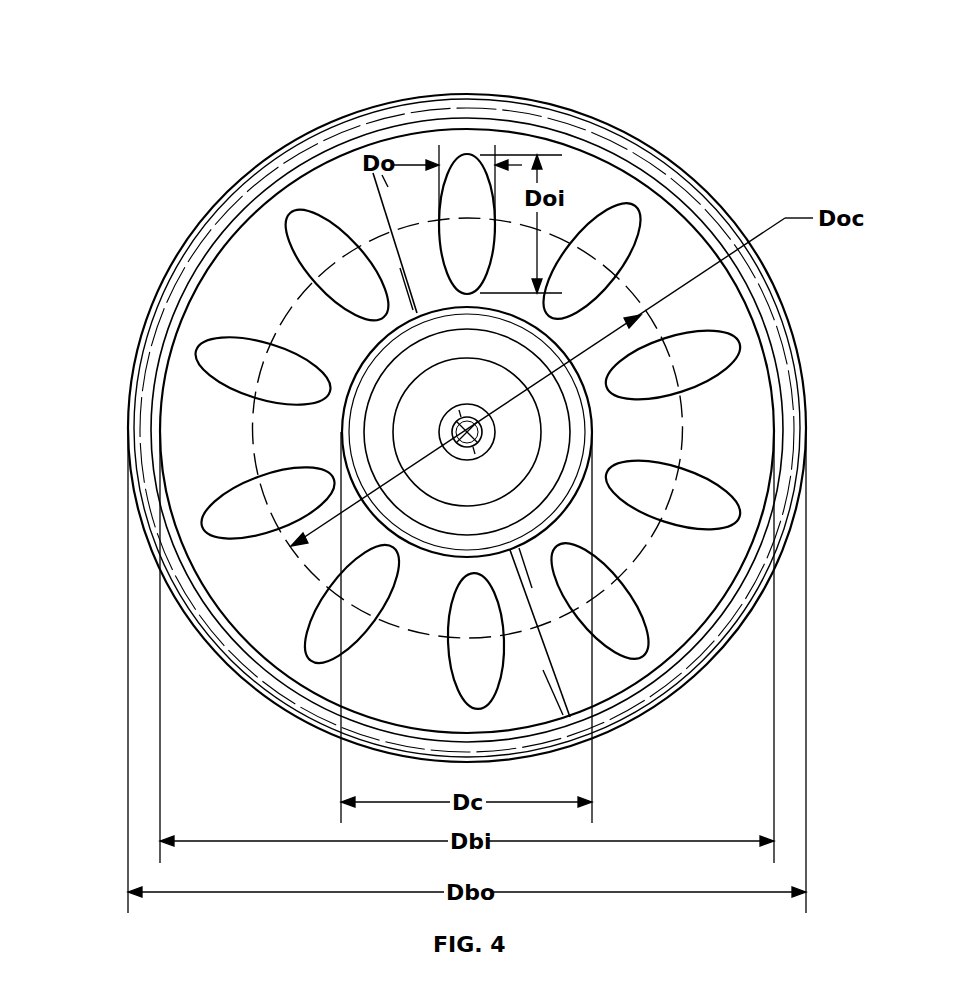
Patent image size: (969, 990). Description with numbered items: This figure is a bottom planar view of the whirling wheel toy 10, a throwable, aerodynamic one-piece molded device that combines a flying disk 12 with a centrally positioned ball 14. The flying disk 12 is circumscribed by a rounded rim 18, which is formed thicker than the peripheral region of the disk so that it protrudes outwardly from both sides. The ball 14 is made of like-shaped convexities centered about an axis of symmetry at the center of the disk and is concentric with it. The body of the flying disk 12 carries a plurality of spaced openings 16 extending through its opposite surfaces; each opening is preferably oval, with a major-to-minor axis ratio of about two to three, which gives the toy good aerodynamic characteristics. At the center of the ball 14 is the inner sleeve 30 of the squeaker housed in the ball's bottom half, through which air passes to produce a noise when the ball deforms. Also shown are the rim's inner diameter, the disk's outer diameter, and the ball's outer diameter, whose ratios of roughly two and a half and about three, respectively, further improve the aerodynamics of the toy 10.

The whirling wheel toy 10 is at (212, 165).
The flying disk 12 is at (407, 430).
The ball 14 is at (468, 445).
The openings 16 is at (396, 432).
The rounded rim 18 is at (516, 428).
The inner sleeve 30 is at (443, 413).